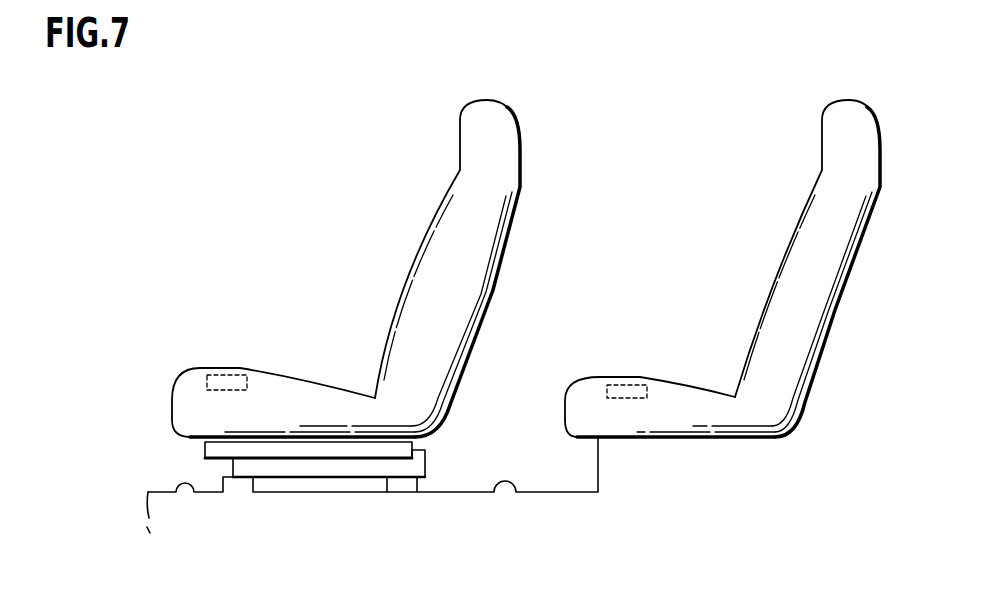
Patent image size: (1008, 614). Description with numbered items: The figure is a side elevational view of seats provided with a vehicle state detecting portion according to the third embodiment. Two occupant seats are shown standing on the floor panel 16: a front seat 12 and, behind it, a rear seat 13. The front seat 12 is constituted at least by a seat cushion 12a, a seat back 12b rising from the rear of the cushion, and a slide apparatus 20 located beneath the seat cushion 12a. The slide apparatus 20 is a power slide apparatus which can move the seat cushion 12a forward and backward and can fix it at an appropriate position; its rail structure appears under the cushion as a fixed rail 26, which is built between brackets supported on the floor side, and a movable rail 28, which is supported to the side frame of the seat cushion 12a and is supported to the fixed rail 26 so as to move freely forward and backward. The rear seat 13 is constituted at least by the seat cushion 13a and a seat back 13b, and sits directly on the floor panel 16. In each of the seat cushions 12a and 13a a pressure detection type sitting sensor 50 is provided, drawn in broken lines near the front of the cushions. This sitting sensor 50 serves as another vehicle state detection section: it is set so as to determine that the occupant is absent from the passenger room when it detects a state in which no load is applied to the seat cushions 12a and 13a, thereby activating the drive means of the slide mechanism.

The front seat 12 is at (296, 268).
The seat cushion 12a is at (190, 405).
The seat back 12b is at (456, 226).
The rear seat 13 is at (672, 268).
The seat cushion 13a is at (578, 413).
The seat back 13b is at (816, 222).
The floor panel 16 is at (178, 478).
The slide apparatus 20 is at (246, 509).
The fixed rail 26 is at (342, 465).
The movable rail 28 is at (280, 448).
The pressure detection type sitting sensor 50 is at (225, 370).